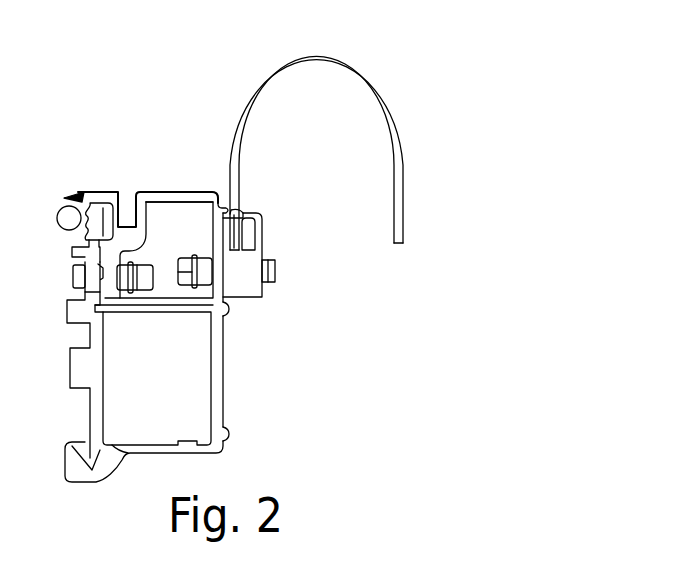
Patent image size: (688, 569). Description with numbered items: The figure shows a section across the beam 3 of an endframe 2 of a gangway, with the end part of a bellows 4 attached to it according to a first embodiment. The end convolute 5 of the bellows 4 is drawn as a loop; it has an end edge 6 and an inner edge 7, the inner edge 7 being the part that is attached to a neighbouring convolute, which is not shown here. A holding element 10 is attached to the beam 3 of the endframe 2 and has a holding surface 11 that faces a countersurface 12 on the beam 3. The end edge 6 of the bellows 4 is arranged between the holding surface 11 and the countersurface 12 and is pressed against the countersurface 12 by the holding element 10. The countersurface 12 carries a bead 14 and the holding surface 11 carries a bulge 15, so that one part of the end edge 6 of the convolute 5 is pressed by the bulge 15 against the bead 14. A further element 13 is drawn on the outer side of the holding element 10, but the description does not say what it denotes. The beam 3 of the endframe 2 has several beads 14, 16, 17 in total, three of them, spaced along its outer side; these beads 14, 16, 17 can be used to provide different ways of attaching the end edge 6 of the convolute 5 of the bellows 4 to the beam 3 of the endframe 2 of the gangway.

The endframe 2 is at (113, 128).
The beam 3 is at (112, 191).
The bellows 4 is at (411, 167).
The end convolute 5 is at (353, 63).
The end edge 6 is at (239, 236).
The inner edge 7 is at (400, 243).
The holding element 10 is at (252, 290).
The holding surface 11 is at (255, 222).
The countersurface 12 is at (214, 203).
The nut 13 is at (266, 270).
The bead 14 is at (210, 203).
The bulge 15 is at (246, 214).
The bead 16 is at (226, 315).
The bead 17 is at (226, 433).